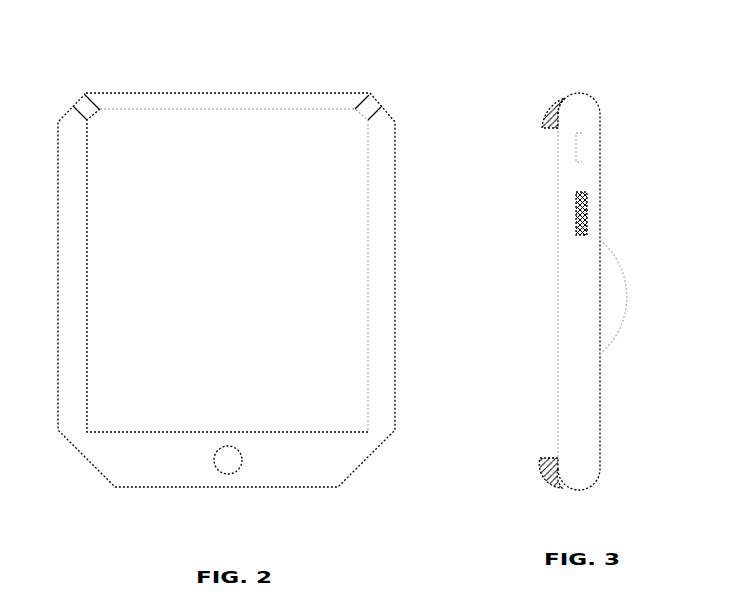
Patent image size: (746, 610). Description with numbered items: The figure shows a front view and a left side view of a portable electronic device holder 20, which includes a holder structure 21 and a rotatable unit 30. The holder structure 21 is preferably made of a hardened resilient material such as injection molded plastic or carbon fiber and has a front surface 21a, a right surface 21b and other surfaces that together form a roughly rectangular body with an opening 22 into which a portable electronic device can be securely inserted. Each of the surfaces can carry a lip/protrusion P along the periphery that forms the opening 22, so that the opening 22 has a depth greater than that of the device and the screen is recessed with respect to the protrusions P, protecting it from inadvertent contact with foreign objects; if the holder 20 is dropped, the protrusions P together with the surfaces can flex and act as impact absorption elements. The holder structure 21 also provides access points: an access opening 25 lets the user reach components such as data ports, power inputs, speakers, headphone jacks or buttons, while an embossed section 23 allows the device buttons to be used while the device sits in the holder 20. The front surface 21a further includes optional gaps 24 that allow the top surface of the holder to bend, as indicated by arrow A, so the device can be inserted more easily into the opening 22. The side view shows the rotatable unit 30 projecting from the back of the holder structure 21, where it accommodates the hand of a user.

In FIG. 2, the holder 20 is at (231, 249).
In FIG. 2, the holder structure 21 is at (215, 93).
In FIG. 2, the front surface 21a is at (143, 461).
In FIG. 3, the right surface 21b is at (579, 291).
In FIG. 2, the opening 22 is at (227, 270).
In FIG. 2, the embossed section 23 is at (228, 460).
In FIG. 3, the embossed section 23 is at (566, 213).
In FIG. 2, the gap 24 is at (104, 132).
In FIG. 3, the access opening 25 is at (565, 150).
In FIG. 3, the rotatable unit 30 is at (622, 249).
In FIG. 2, the lip/protrusion P is at (222, 121).
In FIG. 3, the lip/protrusion P is at (542, 94).
In FIG. 2, the arrow A is at (71, 65).